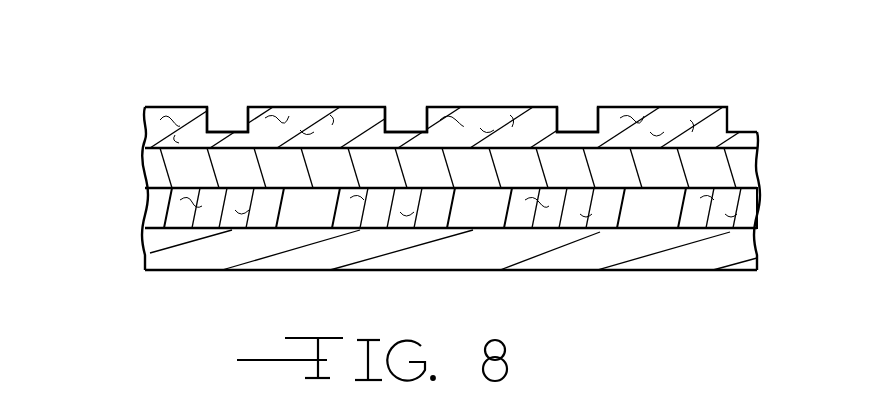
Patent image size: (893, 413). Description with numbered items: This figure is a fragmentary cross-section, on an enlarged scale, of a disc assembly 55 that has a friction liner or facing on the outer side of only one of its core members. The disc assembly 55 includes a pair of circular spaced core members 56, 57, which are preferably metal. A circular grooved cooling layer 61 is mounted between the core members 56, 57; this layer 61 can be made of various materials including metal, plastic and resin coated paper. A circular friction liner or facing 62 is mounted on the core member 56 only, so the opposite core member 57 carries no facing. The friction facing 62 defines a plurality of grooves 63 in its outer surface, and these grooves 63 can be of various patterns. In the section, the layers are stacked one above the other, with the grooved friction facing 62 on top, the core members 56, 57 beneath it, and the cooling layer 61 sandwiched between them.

The disc assembly 55 is at (433, 167).
The core member 56 is at (707, 145).
The core member 57 is at (552, 272).
The grooved cooling layer 61 is at (710, 195).
The friction facing 62 is at (142, 97).
The grooves 63 is at (210, 115).